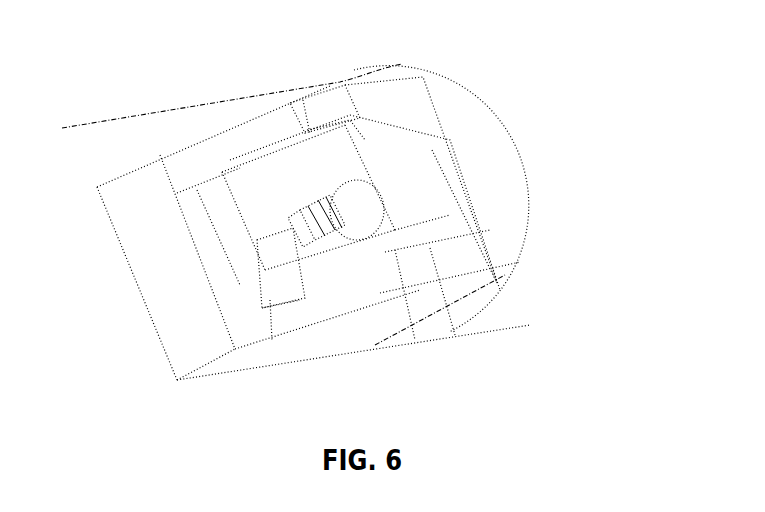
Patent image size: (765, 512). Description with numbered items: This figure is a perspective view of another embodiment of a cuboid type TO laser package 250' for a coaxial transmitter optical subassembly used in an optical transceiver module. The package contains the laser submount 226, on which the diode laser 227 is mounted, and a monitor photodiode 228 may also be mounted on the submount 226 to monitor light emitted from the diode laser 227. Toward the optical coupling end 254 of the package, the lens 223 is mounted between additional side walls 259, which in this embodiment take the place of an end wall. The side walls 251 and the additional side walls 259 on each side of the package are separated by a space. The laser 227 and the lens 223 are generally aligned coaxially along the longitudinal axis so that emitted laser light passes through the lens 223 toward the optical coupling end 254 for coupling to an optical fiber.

The cuboid type TO laser package 250' is at (232, 64).
The optical coupling end 254 is at (509, 220).
The laser submount 226 is at (215, 190).
The additional side walls 259 is at (387, 100).
The side walls 251 is at (323, 107).
The lens 223 is at (422, 182).
The diode laser 227 is at (340, 220).
The monitor photodiode 228 is at (275, 232).